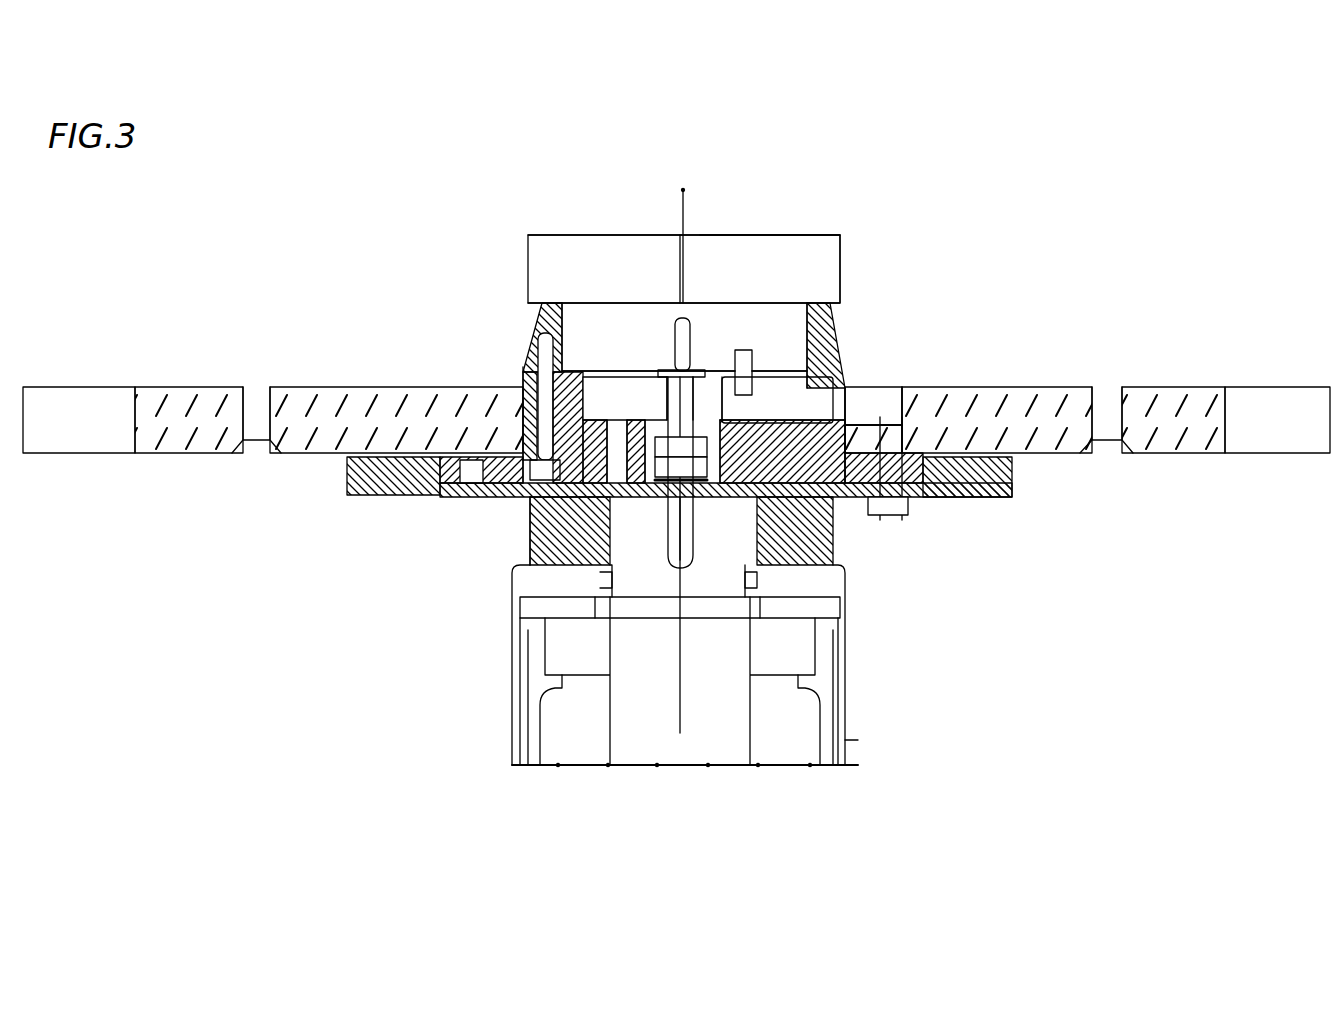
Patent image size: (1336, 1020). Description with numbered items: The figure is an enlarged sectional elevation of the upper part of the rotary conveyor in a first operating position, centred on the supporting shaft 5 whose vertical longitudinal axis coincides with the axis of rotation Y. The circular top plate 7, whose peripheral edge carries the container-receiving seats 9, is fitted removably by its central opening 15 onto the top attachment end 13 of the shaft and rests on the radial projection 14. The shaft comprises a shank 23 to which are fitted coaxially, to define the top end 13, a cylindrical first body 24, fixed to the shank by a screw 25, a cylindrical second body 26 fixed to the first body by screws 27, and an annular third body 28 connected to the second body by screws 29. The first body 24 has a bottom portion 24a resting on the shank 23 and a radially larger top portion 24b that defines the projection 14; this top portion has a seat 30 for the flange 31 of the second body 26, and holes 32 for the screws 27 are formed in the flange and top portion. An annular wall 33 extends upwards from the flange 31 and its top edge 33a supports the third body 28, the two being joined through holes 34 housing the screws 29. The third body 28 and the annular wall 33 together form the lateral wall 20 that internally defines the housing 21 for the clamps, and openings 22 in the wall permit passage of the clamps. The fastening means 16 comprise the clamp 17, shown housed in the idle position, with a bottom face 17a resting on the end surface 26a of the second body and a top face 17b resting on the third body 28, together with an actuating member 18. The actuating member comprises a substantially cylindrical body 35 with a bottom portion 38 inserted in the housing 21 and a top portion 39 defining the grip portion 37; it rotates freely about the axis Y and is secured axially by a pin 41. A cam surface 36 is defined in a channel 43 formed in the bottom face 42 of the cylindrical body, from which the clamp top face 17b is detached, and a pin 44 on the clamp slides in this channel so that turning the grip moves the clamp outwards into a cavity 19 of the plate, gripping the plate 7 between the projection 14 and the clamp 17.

The supporting shaft 5 is at (848, 738).
The circular top plate 7 is at (167, 453).
The seats 9 is at (63, 405).
The top attachment end 13 is at (846, 352).
The radial projection 14 is at (993, 500).
The central opening 15 is at (523, 362).
The fastening means 16 is at (937, 292).
The clamp 17 is at (850, 388).
The bottom face 17a is at (752, 418).
The top face 17b is at (848, 355).
The actuating member 18 is at (725, 228).
The cavities 19 is at (897, 387).
The lateral wall 20 is at (528, 315).
The housing 21 is at (625, 398).
The openings 22 is at (852, 380).
The shank 23 is at (507, 730).
The cylindrical first body 24 is at (530, 528).
The bottom portion 24a is at (530, 553).
The top portion 24b is at (365, 497).
The screw 25 is at (668, 556).
The cylindrical second body 26 is at (768, 420).
The end surface 26a is at (775, 500).
The screws 27 is at (942, 455).
The annular third body 28 is at (530, 405).
The screws 29 is at (515, 443).
The seat 30 is at (468, 497).
The flange 31 is at (365, 455).
The holes 32 is at (907, 518).
The annular wall 33 is at (580, 380).
The top edge 33a is at (558, 365).
The holes 34 is at (522, 443).
The substantially cylindrical body 35 is at (652, 235).
The cam surface 36 is at (742, 350).
The grip portion 37 is at (760, 269).
The bottom portion 38 is at (684, 337).
The top portion 39 is at (604, 269).
The pin 41 is at (700, 340).
The bottom face 42 is at (613, 385).
The channel 43 is at (758, 372).
The pin 44 is at (838, 335).
The axis of rotation Y is at (680, 722).